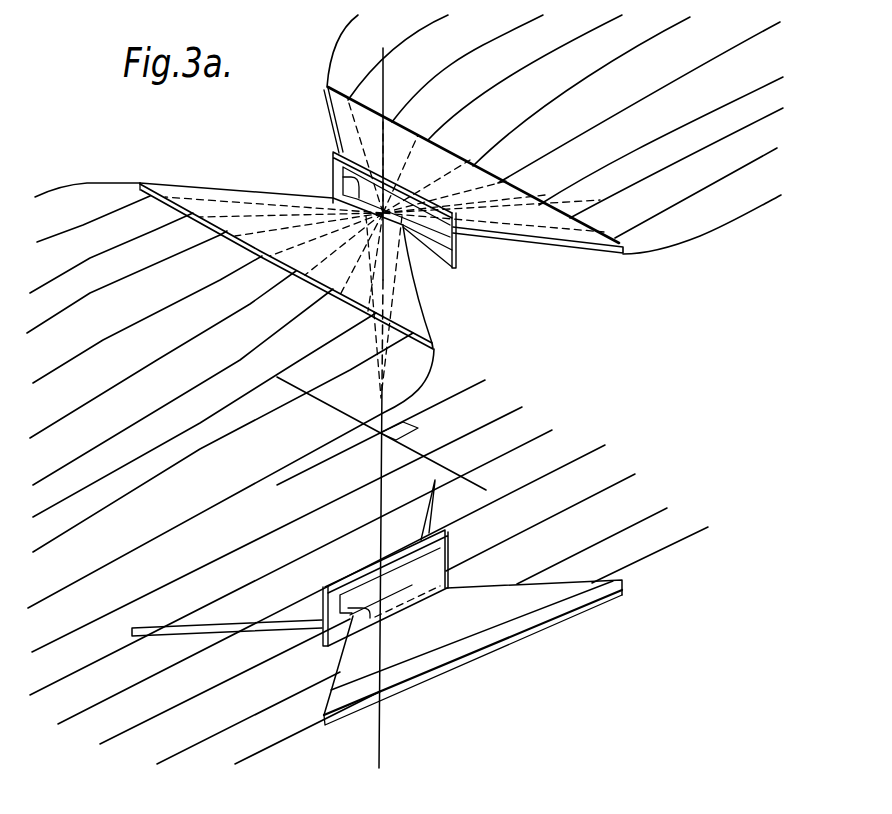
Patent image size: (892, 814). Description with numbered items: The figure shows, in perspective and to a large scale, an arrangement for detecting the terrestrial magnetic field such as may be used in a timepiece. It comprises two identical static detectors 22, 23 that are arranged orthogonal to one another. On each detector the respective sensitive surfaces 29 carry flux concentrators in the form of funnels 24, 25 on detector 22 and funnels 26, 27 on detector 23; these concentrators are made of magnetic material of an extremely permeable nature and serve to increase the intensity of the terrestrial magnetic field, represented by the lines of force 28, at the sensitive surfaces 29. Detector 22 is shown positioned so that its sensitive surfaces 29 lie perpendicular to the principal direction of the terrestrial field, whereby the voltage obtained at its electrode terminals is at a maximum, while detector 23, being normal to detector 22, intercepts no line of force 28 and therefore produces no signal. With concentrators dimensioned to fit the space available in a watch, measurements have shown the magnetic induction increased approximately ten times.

The static detector 22 is at (455, 262).
The static detector 23 is at (325, 647).
The funnel 24 is at (325, 268).
The funnel 25 is at (467, 170).
The funnel 26 is at (230, 600).
The funnel 27 is at (425, 674).
The lines of force 28 is at (600, 66).
The sensitive surface 29 is at (343, 183).